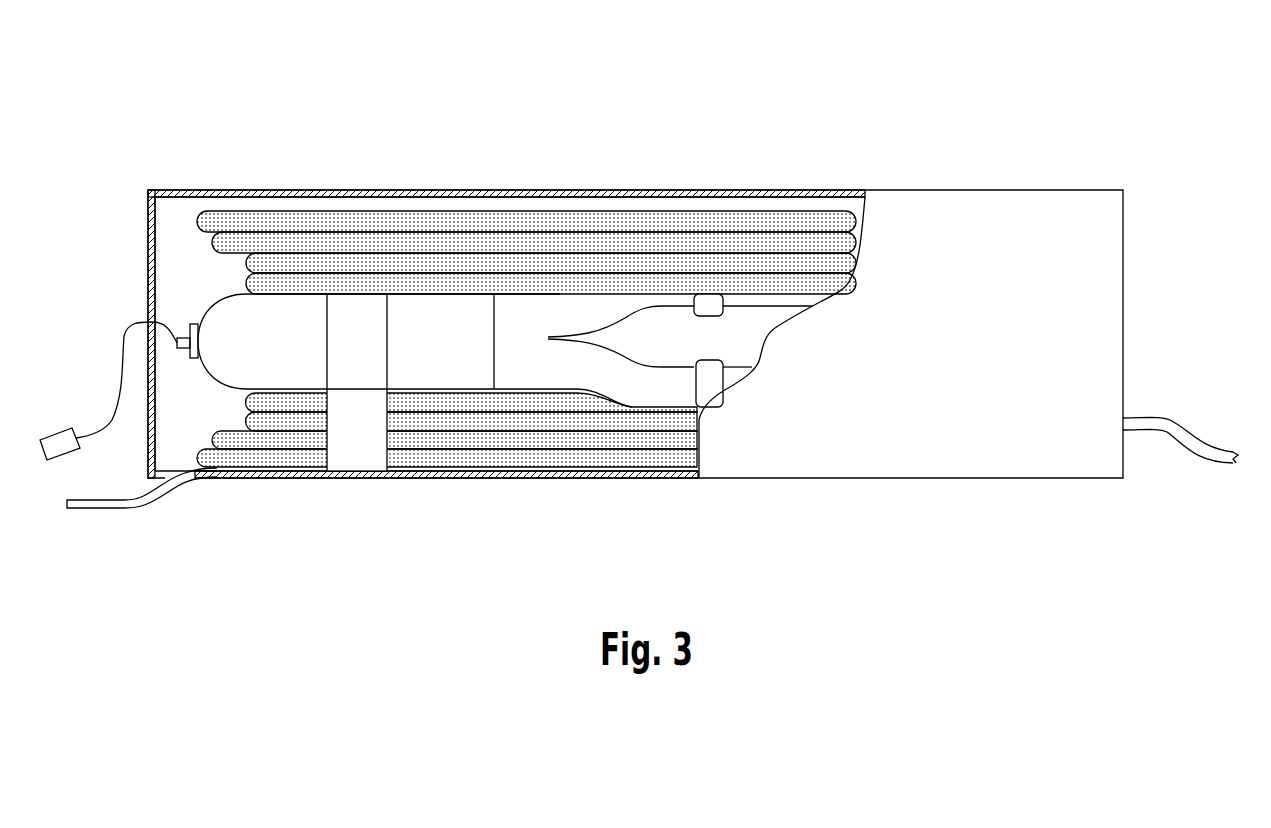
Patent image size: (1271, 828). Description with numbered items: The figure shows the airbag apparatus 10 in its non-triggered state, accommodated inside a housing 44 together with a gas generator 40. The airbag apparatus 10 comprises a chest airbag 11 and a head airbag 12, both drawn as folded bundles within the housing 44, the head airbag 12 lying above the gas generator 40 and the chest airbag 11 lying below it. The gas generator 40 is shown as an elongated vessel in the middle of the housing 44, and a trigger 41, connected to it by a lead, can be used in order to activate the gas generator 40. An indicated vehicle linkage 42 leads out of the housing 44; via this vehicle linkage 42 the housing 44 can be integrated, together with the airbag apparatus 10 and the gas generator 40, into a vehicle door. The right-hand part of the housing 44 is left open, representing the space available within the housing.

The airbag apparatus 10 is at (761, 176).
The chest airbag 11 is at (548, 450).
The head airbag 12 is at (512, 232).
The gas generator 40 is at (237, 323).
The trigger 41 is at (57, 443).
The vehicle linkage 42 is at (103, 503).
The housing 44 is at (957, 233).